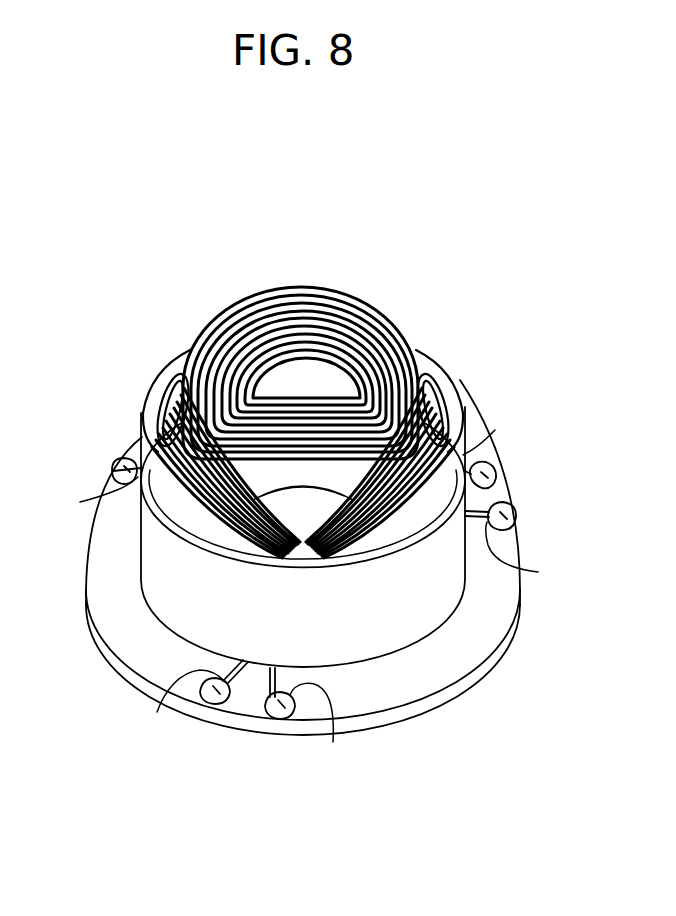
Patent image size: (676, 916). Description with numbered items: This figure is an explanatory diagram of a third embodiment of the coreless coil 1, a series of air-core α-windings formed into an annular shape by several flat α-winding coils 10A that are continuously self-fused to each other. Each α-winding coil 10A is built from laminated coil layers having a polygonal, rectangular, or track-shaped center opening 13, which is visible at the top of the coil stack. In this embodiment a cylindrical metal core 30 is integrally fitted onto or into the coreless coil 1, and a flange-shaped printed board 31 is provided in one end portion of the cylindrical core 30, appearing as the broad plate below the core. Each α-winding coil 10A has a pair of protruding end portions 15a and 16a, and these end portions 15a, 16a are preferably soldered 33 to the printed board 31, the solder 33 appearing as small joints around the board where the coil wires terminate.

The coreless coil 1 is at (360, 293).
The α-winding coil 10A is at (255, 297).
The center opening 13 is at (317, 388).
The protruding end portion 15a is at (281, 588).
The protruding end portion 16a is at (349, 629).
The cylindrical metal core 30 is at (157, 556).
The flange-shaped printed board 31 is at (443, 662).
The solder 33 is at (127, 467).